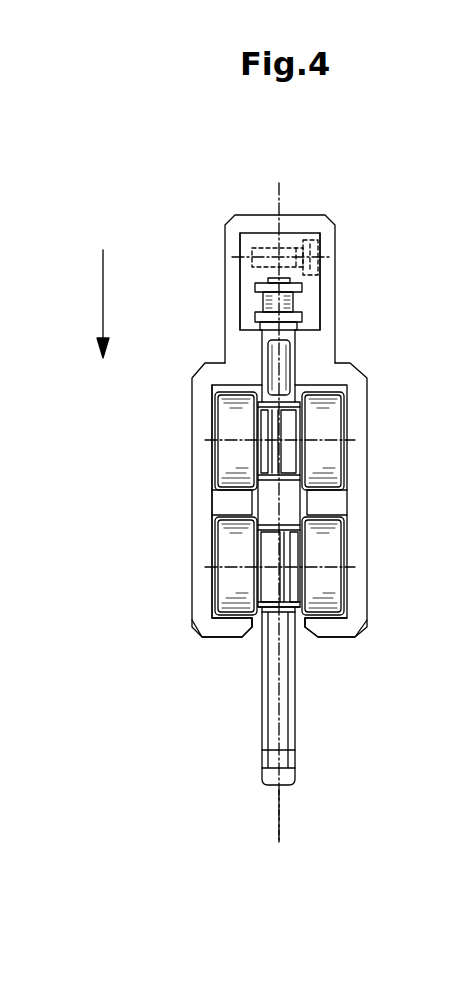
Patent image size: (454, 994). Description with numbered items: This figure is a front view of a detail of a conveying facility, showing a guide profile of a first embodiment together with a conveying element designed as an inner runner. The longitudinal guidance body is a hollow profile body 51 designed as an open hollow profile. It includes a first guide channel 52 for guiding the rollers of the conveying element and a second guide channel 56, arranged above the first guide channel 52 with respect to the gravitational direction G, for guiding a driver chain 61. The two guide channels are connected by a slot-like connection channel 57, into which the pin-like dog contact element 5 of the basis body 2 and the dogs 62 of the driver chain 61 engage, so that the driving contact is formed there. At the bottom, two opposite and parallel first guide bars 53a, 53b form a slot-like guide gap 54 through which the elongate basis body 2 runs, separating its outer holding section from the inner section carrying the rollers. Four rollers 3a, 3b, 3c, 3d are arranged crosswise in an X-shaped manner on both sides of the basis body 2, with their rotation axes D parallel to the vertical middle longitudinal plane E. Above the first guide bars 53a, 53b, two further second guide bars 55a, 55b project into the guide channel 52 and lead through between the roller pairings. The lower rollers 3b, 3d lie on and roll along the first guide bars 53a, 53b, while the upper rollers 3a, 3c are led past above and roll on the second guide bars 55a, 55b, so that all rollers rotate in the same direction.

The basis body 2 is at (274, 502).
The roller 3a is at (323, 407).
The roller 3b is at (333, 588).
The roller 3c is at (233, 405).
The roller 3d is at (237, 537).
The dog contact element 5 is at (285, 390).
The hollow profile body 51 is at (198, 359).
The first guide channel 52 is at (206, 469).
The first guide bar 53a is at (223, 627).
The first guide bar 53b is at (343, 627).
The slot-like guide gap 54 is at (255, 628).
The second guide bar 55a is at (230, 500).
The second guide bar 55b is at (332, 505).
The second guide channel 56 is at (246, 279).
The slot-like connection channel 57 is at (254, 357).
The driver chain 61 is at (285, 297).
The dog 62 is at (283, 328).
The rotation axis D is at (230, 440).
The gravitational direction G is at (103, 303).
The middle longitudinal plane E is at (276, 812).